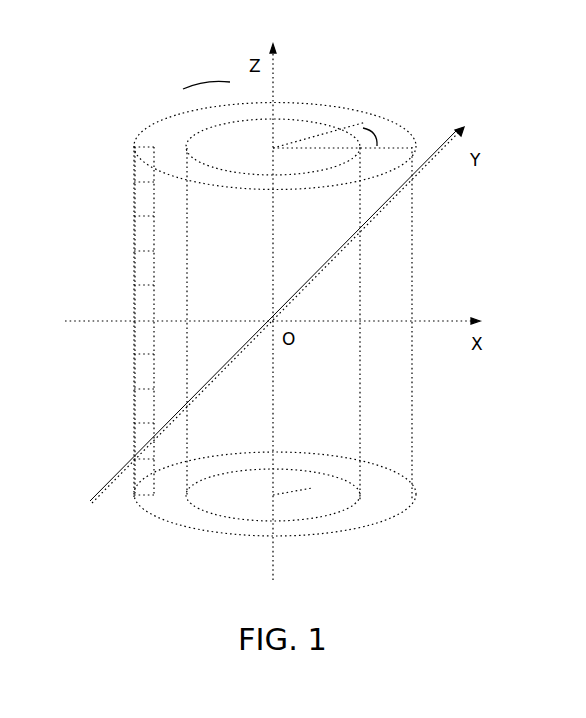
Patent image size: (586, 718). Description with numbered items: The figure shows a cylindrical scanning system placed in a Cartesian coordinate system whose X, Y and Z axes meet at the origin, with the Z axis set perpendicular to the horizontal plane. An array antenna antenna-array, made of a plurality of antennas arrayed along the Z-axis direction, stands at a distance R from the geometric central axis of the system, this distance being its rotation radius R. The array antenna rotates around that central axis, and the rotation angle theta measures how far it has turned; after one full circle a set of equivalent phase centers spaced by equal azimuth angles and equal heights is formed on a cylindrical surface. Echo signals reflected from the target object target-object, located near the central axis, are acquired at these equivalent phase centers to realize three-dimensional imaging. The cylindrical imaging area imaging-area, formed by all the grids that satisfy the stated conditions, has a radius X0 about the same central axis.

The imaging area imaging-area is at (360, 417).
The target object target-object is at (298, 298).
The array antenna antenna-array is at (143, 250).
The rotation radius R is at (307, 147).
The rotation angle theta is at (377, 138).
The radius of the cylindrical imaging area X0 is at (312, 488).